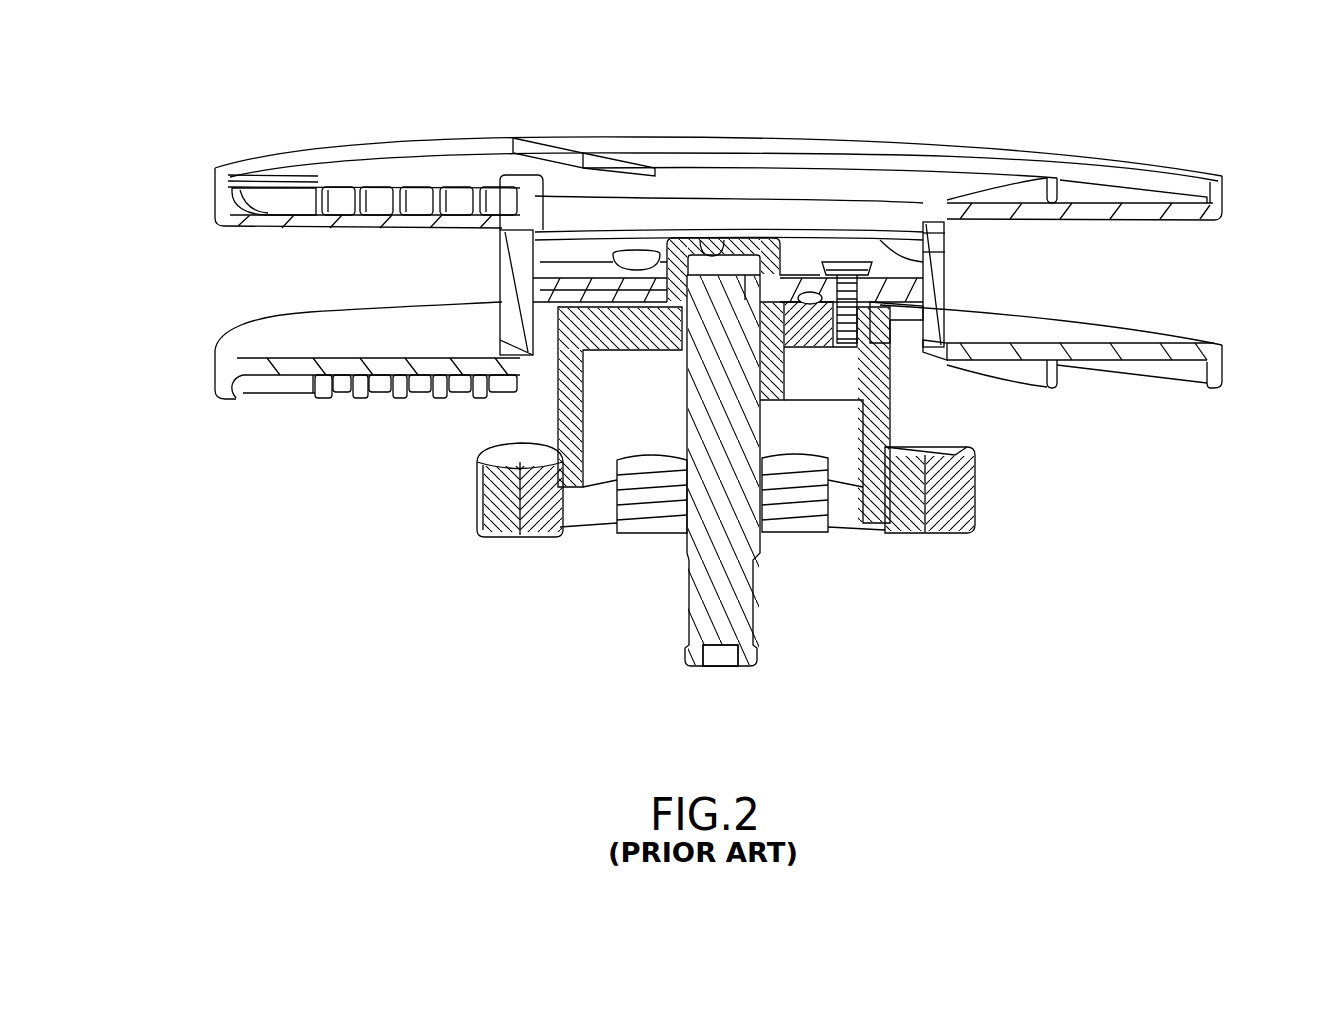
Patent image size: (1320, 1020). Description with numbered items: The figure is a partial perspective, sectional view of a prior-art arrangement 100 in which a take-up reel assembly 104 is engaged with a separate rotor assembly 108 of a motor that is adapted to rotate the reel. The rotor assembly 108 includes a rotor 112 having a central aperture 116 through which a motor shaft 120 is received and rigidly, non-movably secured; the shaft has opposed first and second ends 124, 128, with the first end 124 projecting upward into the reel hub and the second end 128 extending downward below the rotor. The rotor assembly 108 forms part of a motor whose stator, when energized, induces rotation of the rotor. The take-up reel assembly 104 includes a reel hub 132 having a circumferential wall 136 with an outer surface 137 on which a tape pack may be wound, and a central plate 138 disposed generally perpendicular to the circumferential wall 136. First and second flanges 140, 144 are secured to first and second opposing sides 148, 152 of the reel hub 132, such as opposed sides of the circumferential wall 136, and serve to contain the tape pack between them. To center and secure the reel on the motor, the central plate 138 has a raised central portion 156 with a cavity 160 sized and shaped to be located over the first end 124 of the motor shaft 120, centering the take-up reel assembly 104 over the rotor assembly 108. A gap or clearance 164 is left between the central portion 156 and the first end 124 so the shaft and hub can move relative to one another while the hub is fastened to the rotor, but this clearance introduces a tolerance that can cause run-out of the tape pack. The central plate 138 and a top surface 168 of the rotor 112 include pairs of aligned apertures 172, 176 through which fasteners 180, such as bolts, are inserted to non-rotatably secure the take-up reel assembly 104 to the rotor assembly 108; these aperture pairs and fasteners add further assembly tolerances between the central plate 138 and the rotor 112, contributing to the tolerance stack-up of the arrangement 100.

The arrangement 100 is at (282, 99).
The take-up reel assembly 104 is at (194, 148).
The rotor assembly 108 is at (472, 402).
The rotor 112 is at (985, 455).
The central aperture 116 is at (680, 355).
The motor shaft 120 is at (785, 620).
The first end 124 is at (738, 292).
The second end 128 is at (694, 668).
The reel hub 132 is at (970, 270).
The circumferential wall 136 is at (945, 236).
The outer surface 137 is at (946, 253).
The central plate 138 is at (592, 294).
The first flange 140 is at (1238, 190).
The second flange 144 is at (1238, 358).
The first side 148 is at (935, 225).
The second side 152 is at (936, 348).
The raised central portion 156 is at (730, 250).
The cavity 160 is at (712, 256).
The clearance 164 is at (752, 272).
The top surface 168 is at (798, 302).
The apertures 172 is at (858, 290).
The apertures 176 is at (905, 315).
The fasteners 180 is at (840, 268).